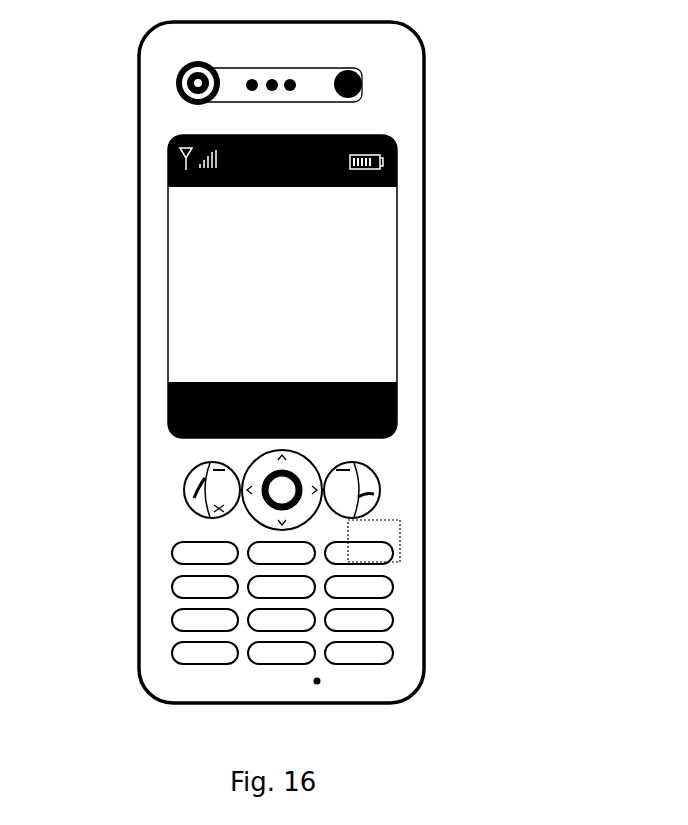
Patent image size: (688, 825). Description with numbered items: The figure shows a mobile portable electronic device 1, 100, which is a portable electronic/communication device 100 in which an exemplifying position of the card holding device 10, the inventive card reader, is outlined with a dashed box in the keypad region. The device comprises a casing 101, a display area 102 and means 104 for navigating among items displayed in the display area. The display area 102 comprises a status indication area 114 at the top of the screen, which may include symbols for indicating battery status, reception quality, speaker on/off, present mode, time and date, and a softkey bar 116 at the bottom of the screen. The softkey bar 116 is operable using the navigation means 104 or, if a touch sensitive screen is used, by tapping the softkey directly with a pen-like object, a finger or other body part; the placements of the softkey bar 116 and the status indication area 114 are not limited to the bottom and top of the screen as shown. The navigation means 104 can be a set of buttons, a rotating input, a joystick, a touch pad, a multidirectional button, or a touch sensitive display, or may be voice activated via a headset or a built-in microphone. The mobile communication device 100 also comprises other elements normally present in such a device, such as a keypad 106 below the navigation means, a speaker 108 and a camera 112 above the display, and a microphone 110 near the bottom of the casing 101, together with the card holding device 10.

The portable electronic device 1 is at (397, 362).
The portable electronic/communication device 100 is at (397, 362).
The casing 101 is at (424, 80).
The card holding device 10 is at (400, 532).
The display area 102 is at (266, 286).
The means for navigating 104 is at (313, 452).
The keypad 106 is at (298, 577).
The speaker 108 is at (290, 85).
The microphone 110 is at (317, 682).
The camera 112 is at (178, 76).
The status indication area 114 is at (172, 140).
The softkey bar 116 is at (168, 393).